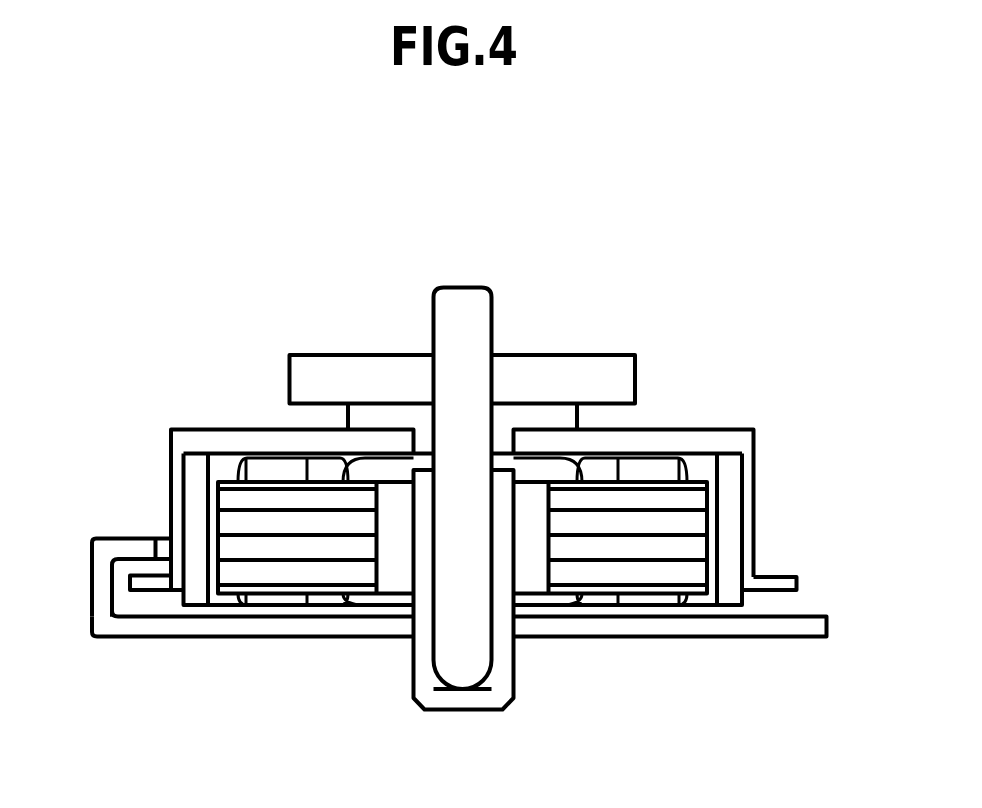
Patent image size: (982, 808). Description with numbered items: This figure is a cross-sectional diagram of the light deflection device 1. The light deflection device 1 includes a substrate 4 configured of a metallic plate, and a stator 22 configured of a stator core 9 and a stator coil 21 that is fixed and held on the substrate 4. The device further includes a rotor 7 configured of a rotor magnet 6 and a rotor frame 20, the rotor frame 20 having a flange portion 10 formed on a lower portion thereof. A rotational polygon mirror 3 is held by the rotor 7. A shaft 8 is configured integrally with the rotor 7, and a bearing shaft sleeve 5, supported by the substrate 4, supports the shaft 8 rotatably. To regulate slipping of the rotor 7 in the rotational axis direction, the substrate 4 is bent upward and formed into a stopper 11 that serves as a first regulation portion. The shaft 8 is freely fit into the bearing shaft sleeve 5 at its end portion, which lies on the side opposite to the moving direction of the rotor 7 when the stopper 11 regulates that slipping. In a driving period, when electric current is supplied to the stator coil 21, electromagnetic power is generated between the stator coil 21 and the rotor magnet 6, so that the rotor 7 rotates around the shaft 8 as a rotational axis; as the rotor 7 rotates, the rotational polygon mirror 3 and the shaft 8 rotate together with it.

The light deflection device 1 is at (392, 228).
The rotational polygon mirror 3 is at (333, 364).
The substrate 4 is at (779, 626).
The bearing shaft sleeve 5 is at (461, 702).
The rotor magnet 6 is at (190, 489).
The rotor 7 is at (70, 375).
The shaft 8 is at (464, 290).
The stator core 9 is at (693, 523).
The flange portion 10 is at (780, 582).
The stopper 11 is at (125, 548).
The rotor frame 20 is at (169, 446).
The stator coil 21 is at (667, 470).
The stator 22 is at (832, 403).